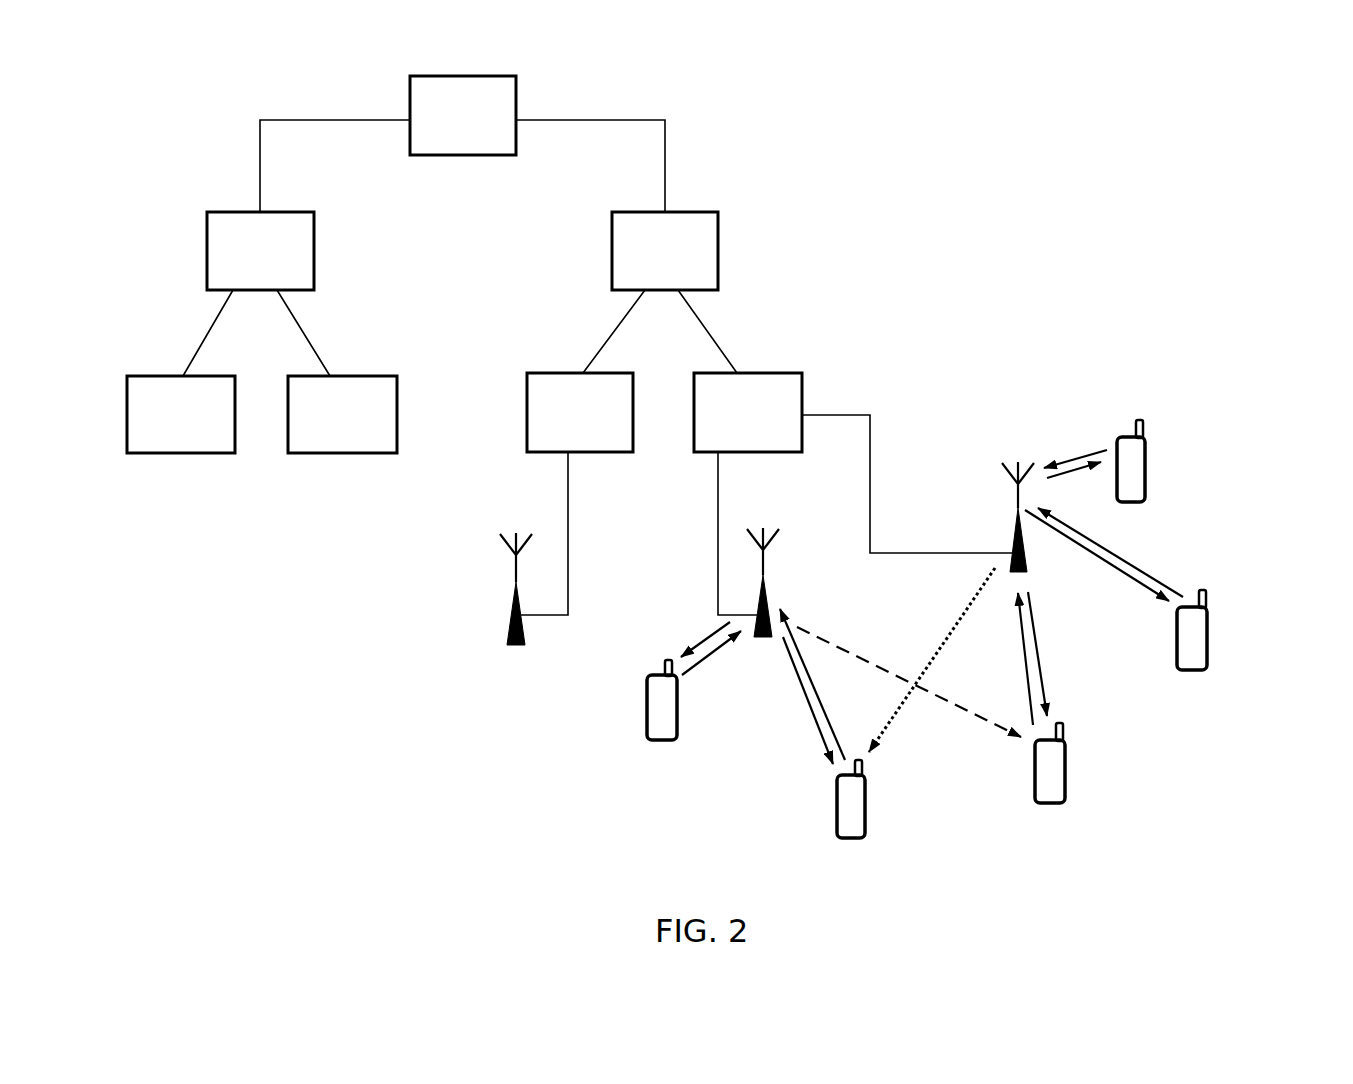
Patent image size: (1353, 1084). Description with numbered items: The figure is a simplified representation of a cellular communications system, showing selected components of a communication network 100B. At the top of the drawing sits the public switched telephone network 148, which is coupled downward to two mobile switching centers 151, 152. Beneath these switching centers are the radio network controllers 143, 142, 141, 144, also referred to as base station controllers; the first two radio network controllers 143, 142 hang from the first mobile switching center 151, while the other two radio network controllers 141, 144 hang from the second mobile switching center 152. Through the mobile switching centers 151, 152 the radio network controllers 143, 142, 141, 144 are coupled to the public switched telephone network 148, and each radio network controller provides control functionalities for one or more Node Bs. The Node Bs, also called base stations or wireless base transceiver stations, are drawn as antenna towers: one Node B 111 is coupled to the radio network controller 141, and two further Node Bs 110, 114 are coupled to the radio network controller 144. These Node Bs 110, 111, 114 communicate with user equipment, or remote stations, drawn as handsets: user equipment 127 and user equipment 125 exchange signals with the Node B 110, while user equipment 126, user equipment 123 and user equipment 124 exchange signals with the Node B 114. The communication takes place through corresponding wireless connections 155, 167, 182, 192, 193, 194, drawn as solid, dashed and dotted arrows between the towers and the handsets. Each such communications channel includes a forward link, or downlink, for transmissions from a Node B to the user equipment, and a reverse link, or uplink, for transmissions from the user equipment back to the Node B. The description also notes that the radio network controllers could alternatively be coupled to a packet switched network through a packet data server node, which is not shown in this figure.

The communication network 100B is at (1025, 297).
The public switched telephone network 148 is at (465, 155).
The mobile switching center 151 is at (314, 250).
The mobile switching center 152 is at (718, 240).
The radio network controller 143 is at (178, 453).
The radio network controller 142 is at (340, 453).
The radio network controller 141 is at (580, 452).
The radio network controller 144 is at (748, 452).
The Node B 111 is at (500, 612).
The Node B 110 is at (776, 584).
The Node B 114 is at (1007, 542).
The user equipment 127 is at (658, 740).
The user equipment 125 is at (850, 838).
The user equipment 124 is at (1050, 803).
The user equipment 123 is at (1190, 670).
The user equipment 126 is at (1145, 477).
The wireless connection 192 is at (763, 725).
The wireless connection 155 is at (1041, 635).
The wireless connection 194 is at (809, 647).
The wireless connection 193 is at (940, 648).
The wireless connection 182 is at (995, 705).
The wireless connection 167 is at (983, 723).